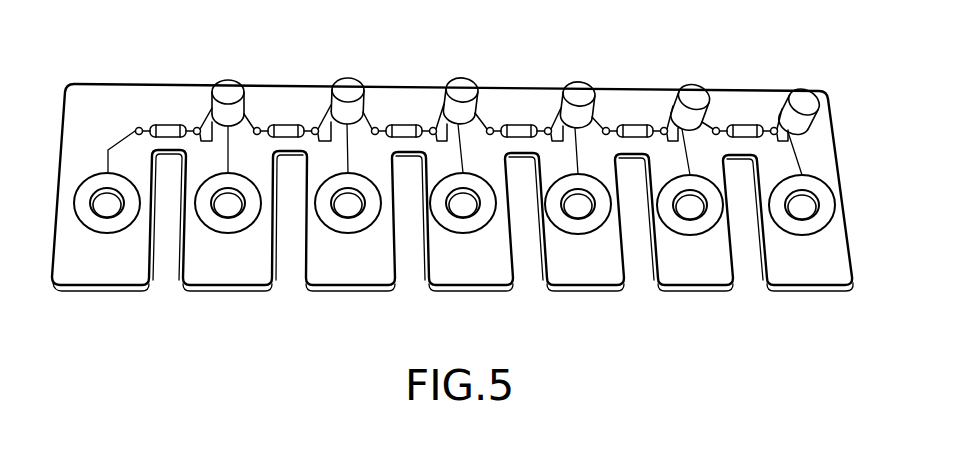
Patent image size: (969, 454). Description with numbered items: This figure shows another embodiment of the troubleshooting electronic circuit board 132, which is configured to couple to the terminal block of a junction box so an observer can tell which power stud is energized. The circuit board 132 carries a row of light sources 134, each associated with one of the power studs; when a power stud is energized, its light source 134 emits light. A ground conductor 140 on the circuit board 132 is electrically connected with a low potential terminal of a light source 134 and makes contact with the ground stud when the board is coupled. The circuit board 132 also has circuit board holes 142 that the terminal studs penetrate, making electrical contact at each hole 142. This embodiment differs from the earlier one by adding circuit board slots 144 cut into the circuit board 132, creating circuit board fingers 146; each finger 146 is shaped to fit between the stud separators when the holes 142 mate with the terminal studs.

The circuit board 132 is at (288, 85).
The light source 134 is at (586, 88).
The ground conductor 140 is at (462, 142).
The circuit board hole 142 is at (108, 213).
The circuit board slot 144 is at (750, 272).
The circuit board finger 146 is at (838, 283).